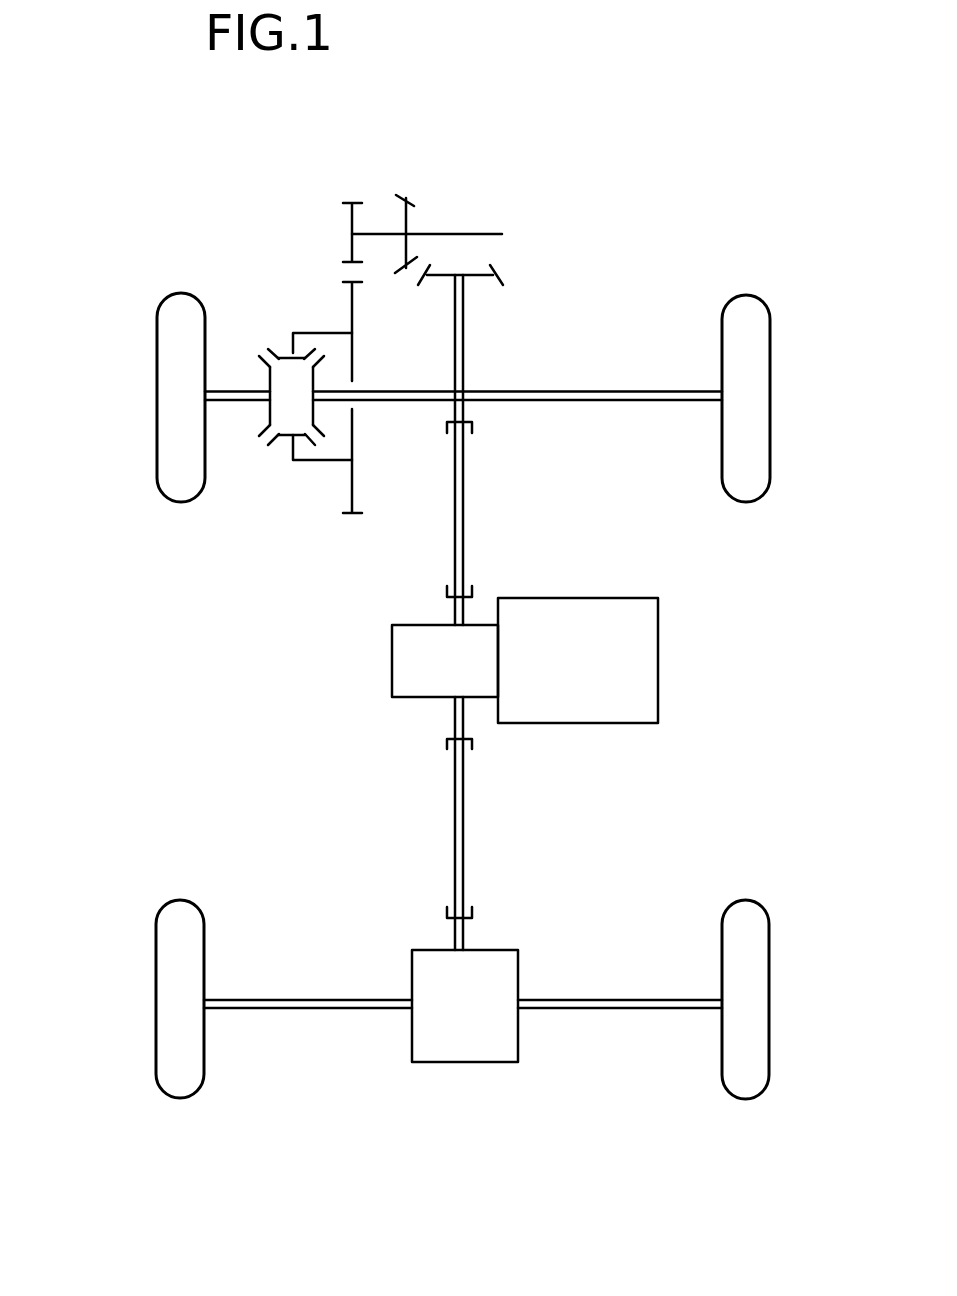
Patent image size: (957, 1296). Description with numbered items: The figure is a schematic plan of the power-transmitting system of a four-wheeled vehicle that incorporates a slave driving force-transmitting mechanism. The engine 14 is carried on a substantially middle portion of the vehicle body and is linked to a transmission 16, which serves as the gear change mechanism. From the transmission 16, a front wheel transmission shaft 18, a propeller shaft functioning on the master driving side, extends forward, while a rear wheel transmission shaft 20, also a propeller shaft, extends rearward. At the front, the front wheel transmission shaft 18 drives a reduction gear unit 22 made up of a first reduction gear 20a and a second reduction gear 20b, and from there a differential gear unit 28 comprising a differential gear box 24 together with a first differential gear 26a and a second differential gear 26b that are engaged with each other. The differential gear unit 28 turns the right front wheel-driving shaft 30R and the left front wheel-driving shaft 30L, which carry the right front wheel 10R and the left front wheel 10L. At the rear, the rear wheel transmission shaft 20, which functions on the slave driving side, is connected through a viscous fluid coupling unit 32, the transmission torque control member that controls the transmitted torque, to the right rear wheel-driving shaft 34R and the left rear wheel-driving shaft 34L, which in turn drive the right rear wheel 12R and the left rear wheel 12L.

The left front wheel 10L is at (173, 393).
The right front wheel 10R is at (758, 403).
The left rear wheel 12L is at (165, 1013).
The right rear wheel 12R is at (755, 998).
The engine 14 is at (648, 677).
The transmission 16 is at (403, 663).
The front wheel transmission shaft 18 is at (464, 510).
The rear wheel transmission shaft 20 is at (460, 833).
The first reduction gear 20a is at (406, 216).
The second reduction gear 20b is at (483, 278).
The reduction gear unit 22 is at (486, 232).
The differential gear box 24 is at (317, 462).
The first differential gear 26a is at (283, 435).
The second differential gear 26b is at (269, 380).
The differential gear unit 28 is at (280, 328).
The left front wheel-driving shaft 30L is at (243, 402).
The right front wheel-driving shaft 30R is at (623, 403).
The viscous fluid coupling unit 32 is at (468, 1062).
The left rear wheel-driving shaft 34L is at (322, 1012).
The right rear wheel-driving shaft 34R is at (628, 1012).